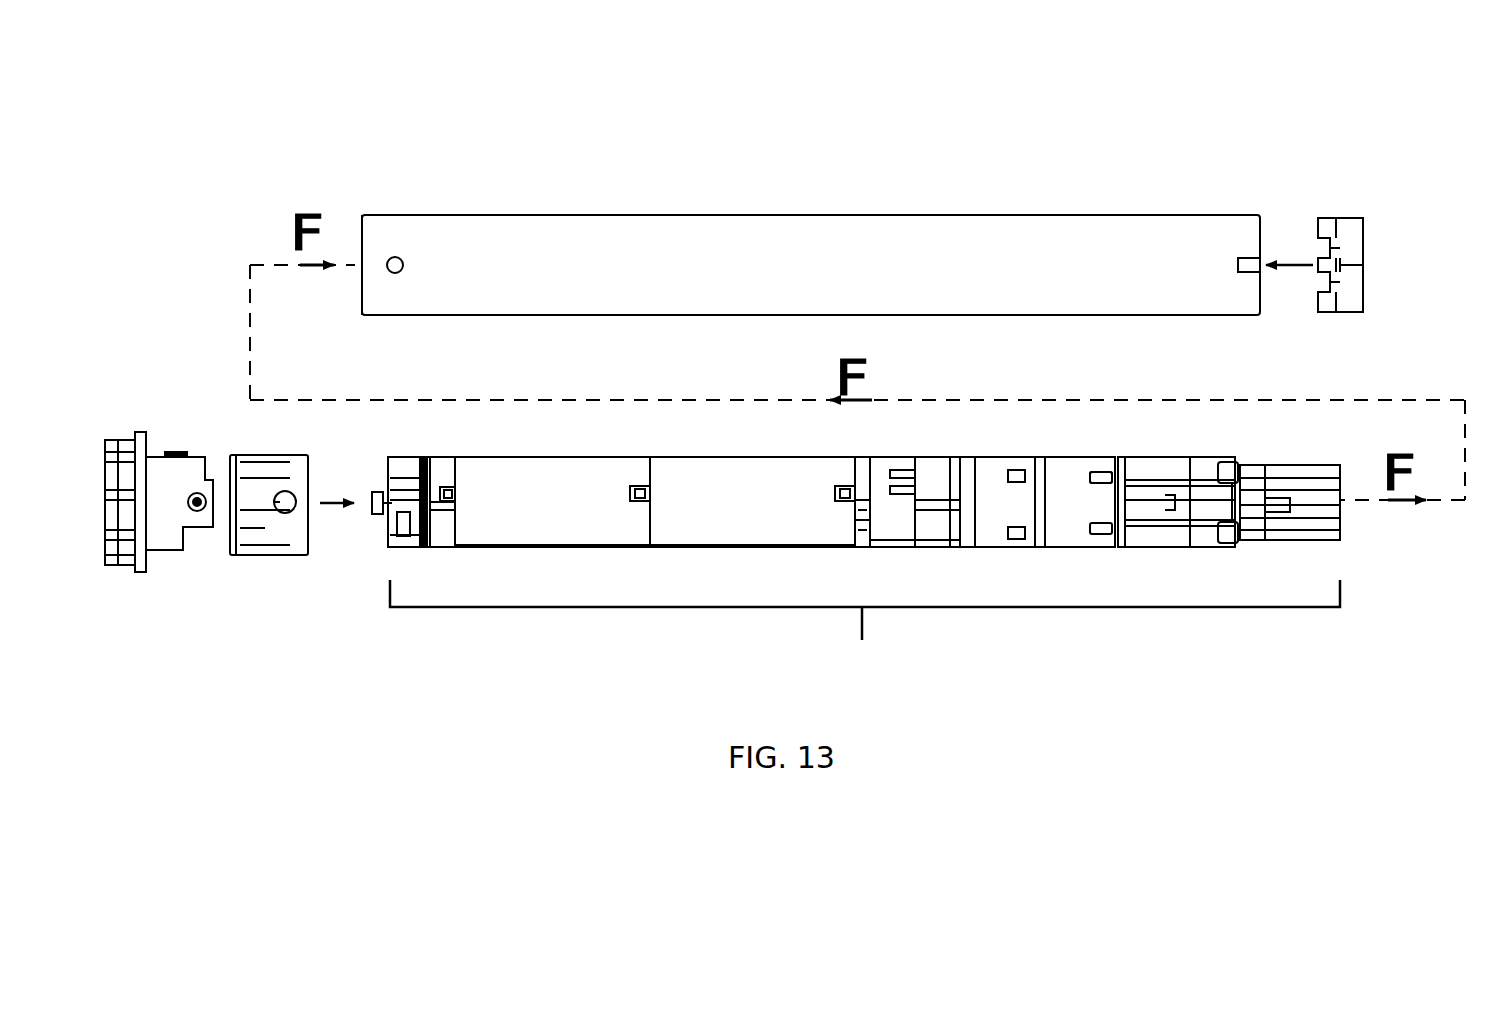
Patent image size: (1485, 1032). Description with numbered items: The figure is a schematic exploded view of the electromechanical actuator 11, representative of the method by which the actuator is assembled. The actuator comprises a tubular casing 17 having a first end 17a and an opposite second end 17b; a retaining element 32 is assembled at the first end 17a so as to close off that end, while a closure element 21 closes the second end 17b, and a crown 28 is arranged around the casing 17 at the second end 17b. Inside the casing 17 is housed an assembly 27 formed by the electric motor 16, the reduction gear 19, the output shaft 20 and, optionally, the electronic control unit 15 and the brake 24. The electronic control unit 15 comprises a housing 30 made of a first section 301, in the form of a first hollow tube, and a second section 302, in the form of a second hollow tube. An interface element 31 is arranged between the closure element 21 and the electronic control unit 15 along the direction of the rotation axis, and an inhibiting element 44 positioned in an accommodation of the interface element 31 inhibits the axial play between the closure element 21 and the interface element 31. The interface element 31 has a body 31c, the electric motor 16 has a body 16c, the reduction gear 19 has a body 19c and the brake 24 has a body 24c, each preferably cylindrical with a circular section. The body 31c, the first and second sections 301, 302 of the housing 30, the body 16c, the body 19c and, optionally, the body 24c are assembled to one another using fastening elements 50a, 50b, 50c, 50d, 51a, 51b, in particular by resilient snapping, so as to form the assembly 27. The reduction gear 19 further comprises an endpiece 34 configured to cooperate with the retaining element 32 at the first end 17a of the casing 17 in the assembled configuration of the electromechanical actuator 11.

The electromechanical actuator 11 is at (232, 212).
The casing 17 is at (588, 257).
The first end 17a is at (1265, 230).
The second end 17b is at (362, 228).
The retaining element 32 is at (1353, 240).
The fastening element 50a is at (836, 492).
The fastening element 50b is at (845, 493).
The fastening element 50c is at (440, 494).
The fastening element 50d is at (447, 494).
The fastening element 51a is at (636, 475).
The fastening element 51b is at (640, 493).
The closure element 21 is at (158, 548).
The crown 28 is at (270, 545).
The inhibiting element 44 is at (378, 515).
The interface element 31 is at (428, 537).
The body of the interface element 31c is at (432, 475).
The housing 30 is at (574, 527).
The first section 301 is at (520, 478).
The second section 302 is at (730, 478).
The electronic control unit 15 is at (708, 523).
The electric motor 16 is at (945, 540).
The body of the electric motor 16c is at (905, 455).
The brake 24 is at (1093, 542).
The body of the brake 24c is at (1068, 455).
The reduction gear 19 is at (1140, 538).
The body of the reduction gear 19c is at (1162, 458).
The endpiece 34 is at (1222, 466).
The output shaft 20 is at (1325, 513).
The assembly 27 is at (865, 646).